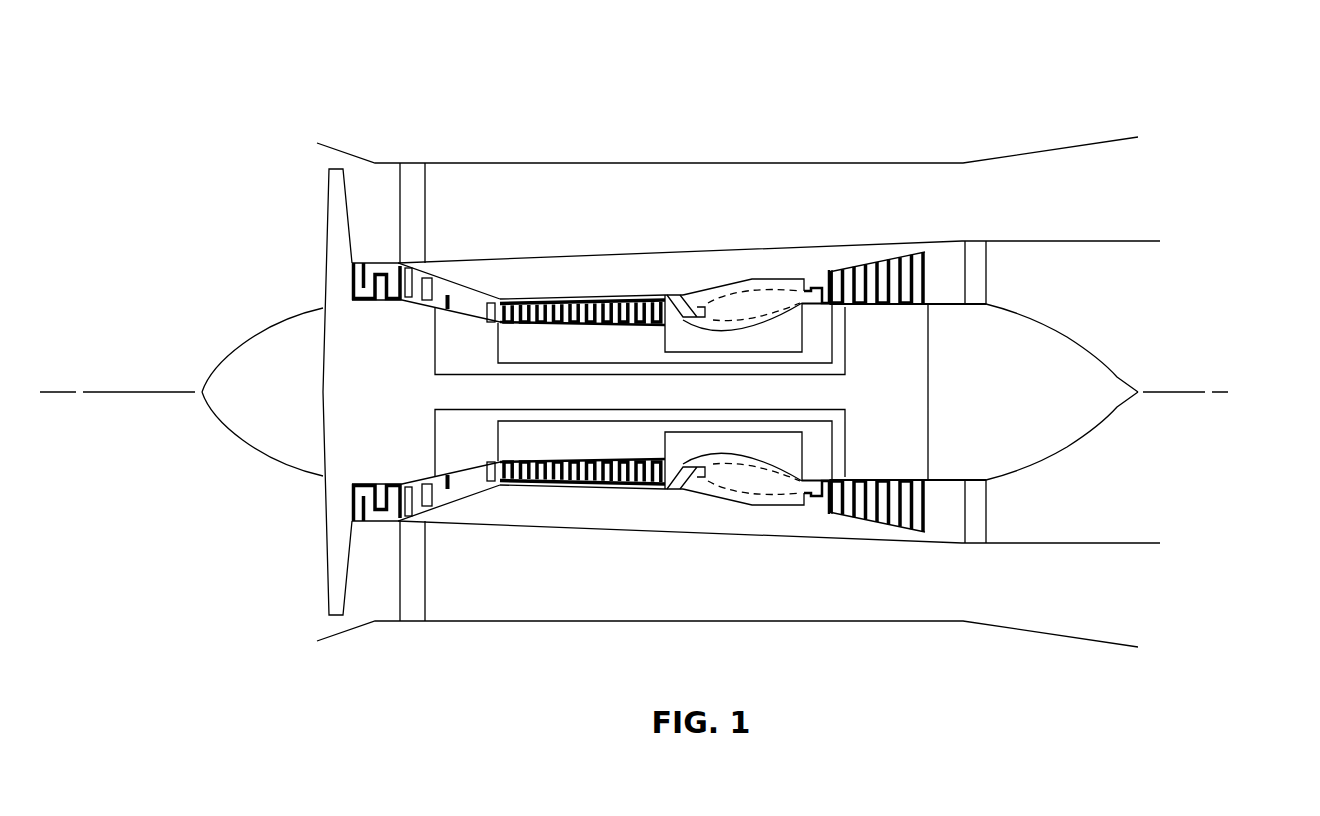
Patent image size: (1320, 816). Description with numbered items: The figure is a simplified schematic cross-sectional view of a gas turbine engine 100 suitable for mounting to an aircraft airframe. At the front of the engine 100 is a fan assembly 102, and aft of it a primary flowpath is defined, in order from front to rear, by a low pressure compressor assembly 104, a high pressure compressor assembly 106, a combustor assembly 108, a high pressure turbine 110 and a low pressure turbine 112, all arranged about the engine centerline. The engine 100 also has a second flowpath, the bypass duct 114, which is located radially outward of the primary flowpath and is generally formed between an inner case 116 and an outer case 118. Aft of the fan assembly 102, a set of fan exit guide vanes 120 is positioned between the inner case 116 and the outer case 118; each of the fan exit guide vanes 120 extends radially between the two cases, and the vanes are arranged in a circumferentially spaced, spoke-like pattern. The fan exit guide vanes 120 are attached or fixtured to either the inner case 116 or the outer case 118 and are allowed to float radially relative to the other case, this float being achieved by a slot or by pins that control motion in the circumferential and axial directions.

The gas turbine engine 100 is at (288, 96).
The fan assembly 102 is at (333, 227).
The low pressure compressor assembly 104 is at (380, 307).
The high pressure compressor assembly 106 is at (582, 303).
The combustor assembly 108 is at (759, 292).
The high pressure turbine 110 is at (815, 285).
The low pressure turbine 112 is at (887, 250).
The bypass duct 114 is at (560, 182).
The inner case 116 is at (512, 258).
The outer case 118 is at (478, 162).
The fan exit guide vanes 120 is at (415, 176).